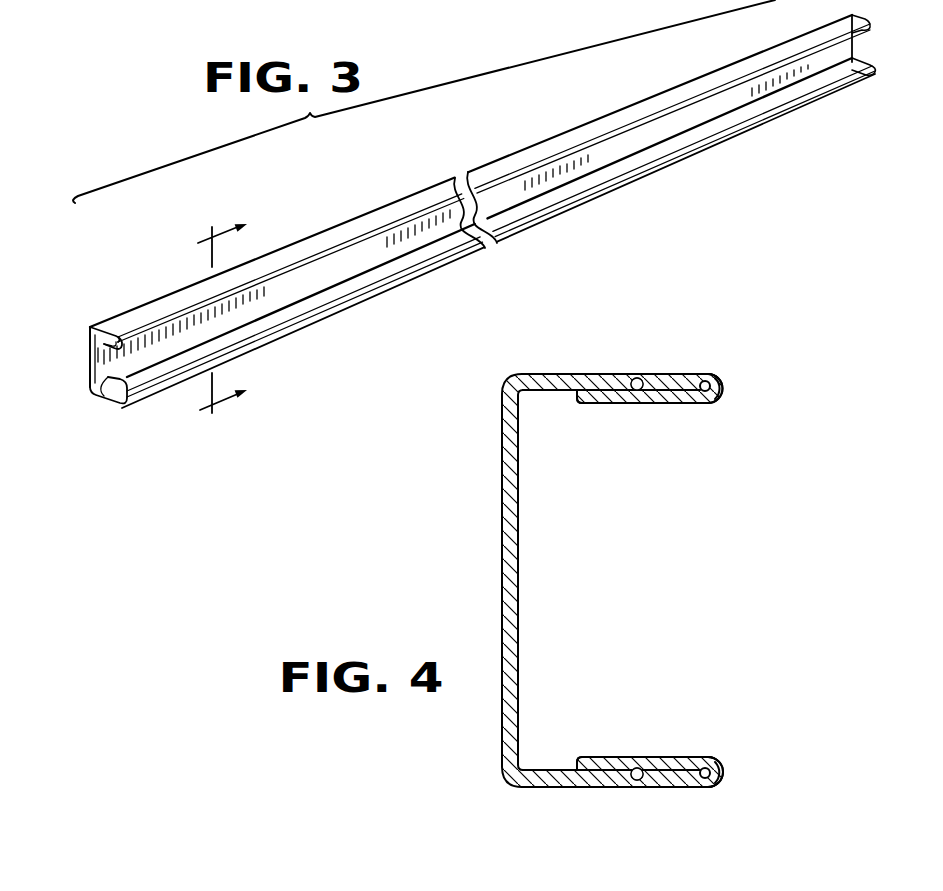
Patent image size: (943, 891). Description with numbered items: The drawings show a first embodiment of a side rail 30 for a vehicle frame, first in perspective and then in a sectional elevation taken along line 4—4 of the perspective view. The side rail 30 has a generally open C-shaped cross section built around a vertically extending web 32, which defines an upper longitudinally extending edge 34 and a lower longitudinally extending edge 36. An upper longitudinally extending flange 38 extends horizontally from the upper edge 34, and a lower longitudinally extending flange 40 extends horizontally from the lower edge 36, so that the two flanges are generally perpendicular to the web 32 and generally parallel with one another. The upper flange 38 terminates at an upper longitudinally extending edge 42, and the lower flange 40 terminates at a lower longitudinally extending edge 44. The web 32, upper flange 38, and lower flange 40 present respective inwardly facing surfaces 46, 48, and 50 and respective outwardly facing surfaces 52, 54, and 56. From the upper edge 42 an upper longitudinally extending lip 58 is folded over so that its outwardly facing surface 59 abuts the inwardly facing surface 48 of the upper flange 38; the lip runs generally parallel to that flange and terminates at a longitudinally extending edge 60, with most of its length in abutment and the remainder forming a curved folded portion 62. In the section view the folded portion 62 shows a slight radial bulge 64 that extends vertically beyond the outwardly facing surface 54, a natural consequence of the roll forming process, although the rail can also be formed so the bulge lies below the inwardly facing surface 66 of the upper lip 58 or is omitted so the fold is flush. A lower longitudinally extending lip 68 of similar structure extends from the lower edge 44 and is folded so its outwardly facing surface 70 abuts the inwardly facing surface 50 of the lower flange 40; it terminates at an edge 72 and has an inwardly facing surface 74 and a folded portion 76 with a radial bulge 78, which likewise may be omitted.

In FIG. 3, the section line 4— 4 is at (213, 329).
In FIG. 3, the side rail 30 is at (464, 251).
In FIG. 4, the side rail 30 is at (458, 553).
In FIG. 3, the web 32 is at (90, 363).
In FIG. 4, the web 32 is at (504, 510).
In FIG. 4, the upper longitudinally extending edge 34 is at (510, 378).
In FIG. 4, the lower longitudinally extending edge 36 is at (512, 778).
In FIG. 3, the upper longitudinally extending flange 38 is at (100, 328).
In FIG. 4, the upper longitudinally extending flange 38 is at (611, 382).
In FIG. 3, the lower longitudinally extending flange 40 is at (102, 400).
In FIG. 4, the lower longitudinally extending flange 40 is at (602, 781).
In FIG. 4, the upper longitudinally extending edge 42 is at (680, 372).
In FIG. 4, the lower longitudinally extending edge 44 is at (680, 786).
In FIG. 4, the inwardly facing surface 46 is at (523, 633).
In FIG. 4, the inwardly facing surface 48 is at (540, 392).
In FIG. 4, the inwardly facing surface 50 is at (553, 768).
In FIG. 4, the outwardly facing surface 52 is at (504, 617).
In FIG. 4, the outwardly facing surface 54 is at (578, 375).
In FIG. 4, the outwardly facing surface 56 is at (562, 790).
In FIG. 3, the upper longitudinally extending lip 58 is at (135, 347).
In FIG. 4, the upper longitudinally extending lip 58 is at (678, 402).
In FIG. 4, the outwardly facing surface 59 is at (648, 392).
In FIG. 4, the longitudinally extending edge 60 is at (567, 404).
In FIG. 4, the curved folded portion 62 is at (724, 385).
In FIG. 4, the radial bulge 64 is at (713, 370).
In FIG. 4, the inwardly facing surface 66 is at (617, 404).
In FIG. 3, the lower longitudinally extending lip 68 is at (128, 388).
In FIG. 4, the lower longitudinally extending lip 68 is at (683, 757).
In FIG. 4, the outwardly facing surface 70 is at (642, 770).
In FIG. 4, the edge 72 is at (577, 757).
In FIG. 4, the inwardly facing surface 74 is at (613, 757).
In FIG. 4, the folded portion 76 is at (727, 777).
In FIG. 4, the radial bulge 78 is at (705, 796).